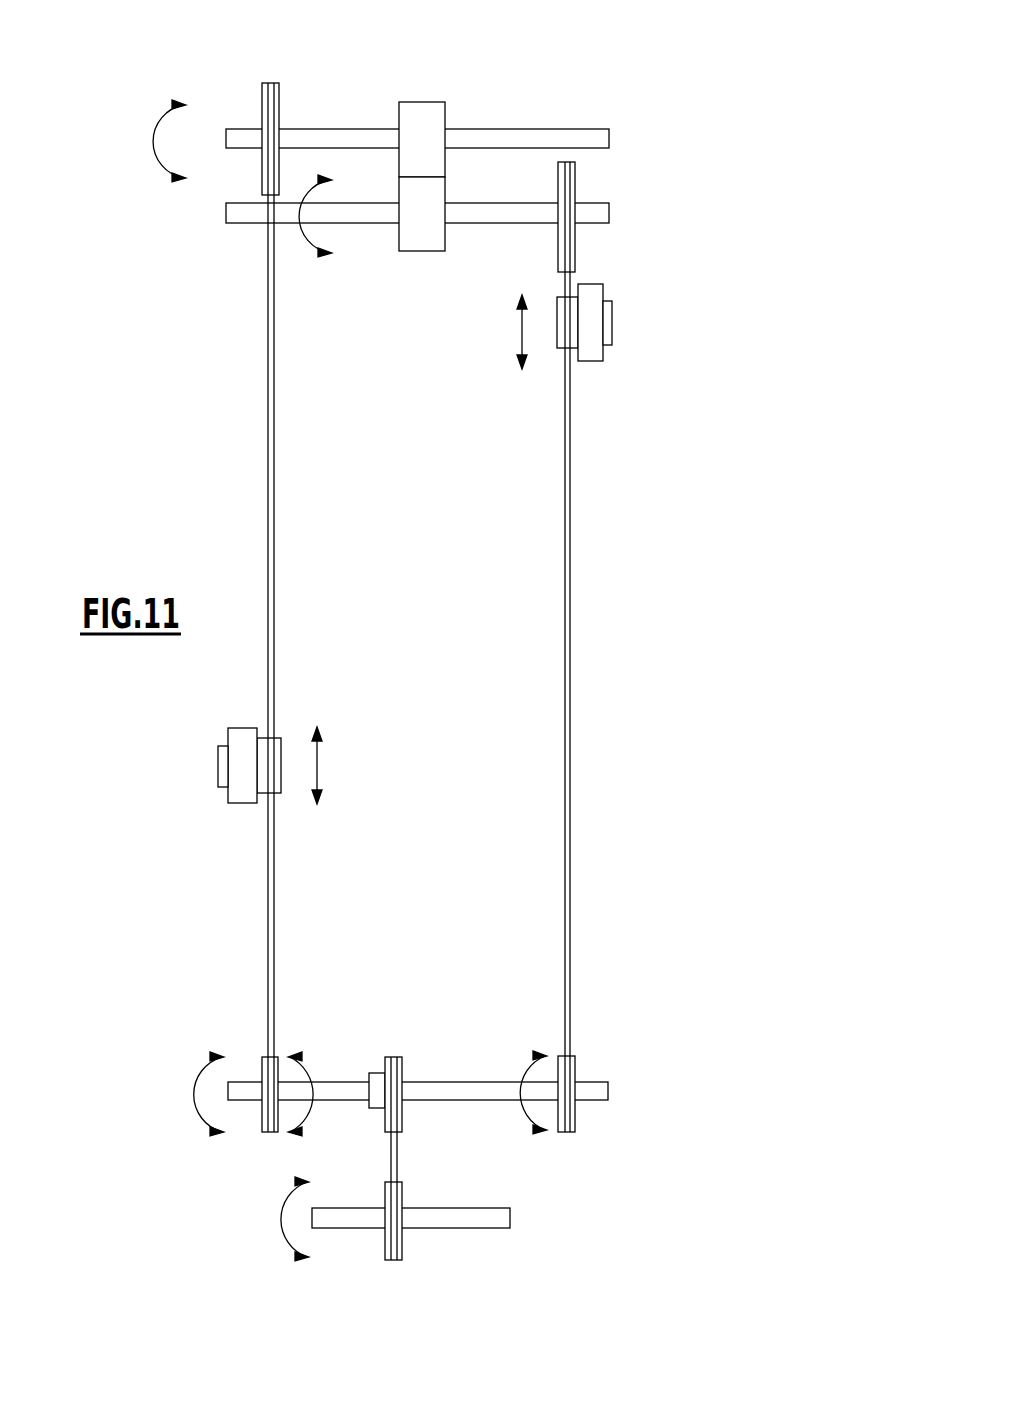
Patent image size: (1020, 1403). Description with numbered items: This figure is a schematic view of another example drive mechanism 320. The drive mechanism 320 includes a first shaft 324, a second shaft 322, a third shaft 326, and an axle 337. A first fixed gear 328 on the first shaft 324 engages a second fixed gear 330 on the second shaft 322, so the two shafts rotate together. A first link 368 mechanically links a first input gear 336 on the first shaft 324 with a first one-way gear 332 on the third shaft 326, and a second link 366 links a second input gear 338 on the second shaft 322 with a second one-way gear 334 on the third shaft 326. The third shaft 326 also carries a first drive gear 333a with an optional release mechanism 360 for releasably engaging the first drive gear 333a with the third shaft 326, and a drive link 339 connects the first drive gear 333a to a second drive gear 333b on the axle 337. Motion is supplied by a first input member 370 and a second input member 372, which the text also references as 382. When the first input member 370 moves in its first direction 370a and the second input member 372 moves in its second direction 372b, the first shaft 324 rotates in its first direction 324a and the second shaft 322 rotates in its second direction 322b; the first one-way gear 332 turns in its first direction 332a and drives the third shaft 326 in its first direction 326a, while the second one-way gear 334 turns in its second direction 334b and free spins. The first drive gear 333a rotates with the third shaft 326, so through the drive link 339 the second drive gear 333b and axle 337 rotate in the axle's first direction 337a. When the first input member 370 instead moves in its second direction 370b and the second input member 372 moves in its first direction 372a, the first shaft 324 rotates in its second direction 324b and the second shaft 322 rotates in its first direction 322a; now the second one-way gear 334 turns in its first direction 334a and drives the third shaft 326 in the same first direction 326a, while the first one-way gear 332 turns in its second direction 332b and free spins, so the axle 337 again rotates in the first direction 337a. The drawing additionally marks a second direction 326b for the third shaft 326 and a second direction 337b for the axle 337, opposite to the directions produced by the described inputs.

The drive mechanism 320 is at (722, 48).
The second shaft 322 is at (312, 129).
The first direction of second shaft 322a is at (199, 136).
The second direction of second shaft 322b is at (209, 179).
The first shaft 324 is at (610, 210).
The first direction of first shaft 324a is at (345, 211).
The second direction of first shaft 324b is at (355, 254).
The third shaft 326 is at (609, 1095).
The first direction of third shaft 326a is at (209, 1079).
The second rotation direction of third shaft 326b is at (209, 1147).
The first fixed gear 328 is at (424, 252).
The second fixed gear 330 is at (445, 102).
The first one-way gear 332 is at (576, 1060).
The first direction of first one-way gear 332a is at (529, 1076).
The second direction of first one-way gear 332b is at (536, 1148).
The first drive gear 333a is at (400, 1057).
The second drive gear 333b is at (388, 1260).
The second one-way gear 334 is at (278, 1057).
The first direction of second one-way gear 334a is at (320, 1080).
The second direction of second one-way gear 334b is at (312, 1147).
The first input gear 336 is at (577, 183).
The axle 337 is at (485, 1228).
The first direction of axle 337a is at (323, 1215).
The second rotation direction of output shaft 337b is at (331, 1259).
The second input gear 338 is at (279, 84).
The drive link 339 is at (398, 1160).
The release mechanism 360 is at (373, 1073).
The second link 366 is at (268, 484).
The first link 368 is at (570, 565).
The first input member 370 is at (603, 361).
The first direction of first input member 370a is at (524, 318).
The second direction of first input member 370b is at (524, 377).
The second input member 372 is at (229, 728).
The first direction of second input member 372a is at (318, 752).
The second direction of second input member 372b is at (318, 811).
The second input member 382 is at (612, 320).